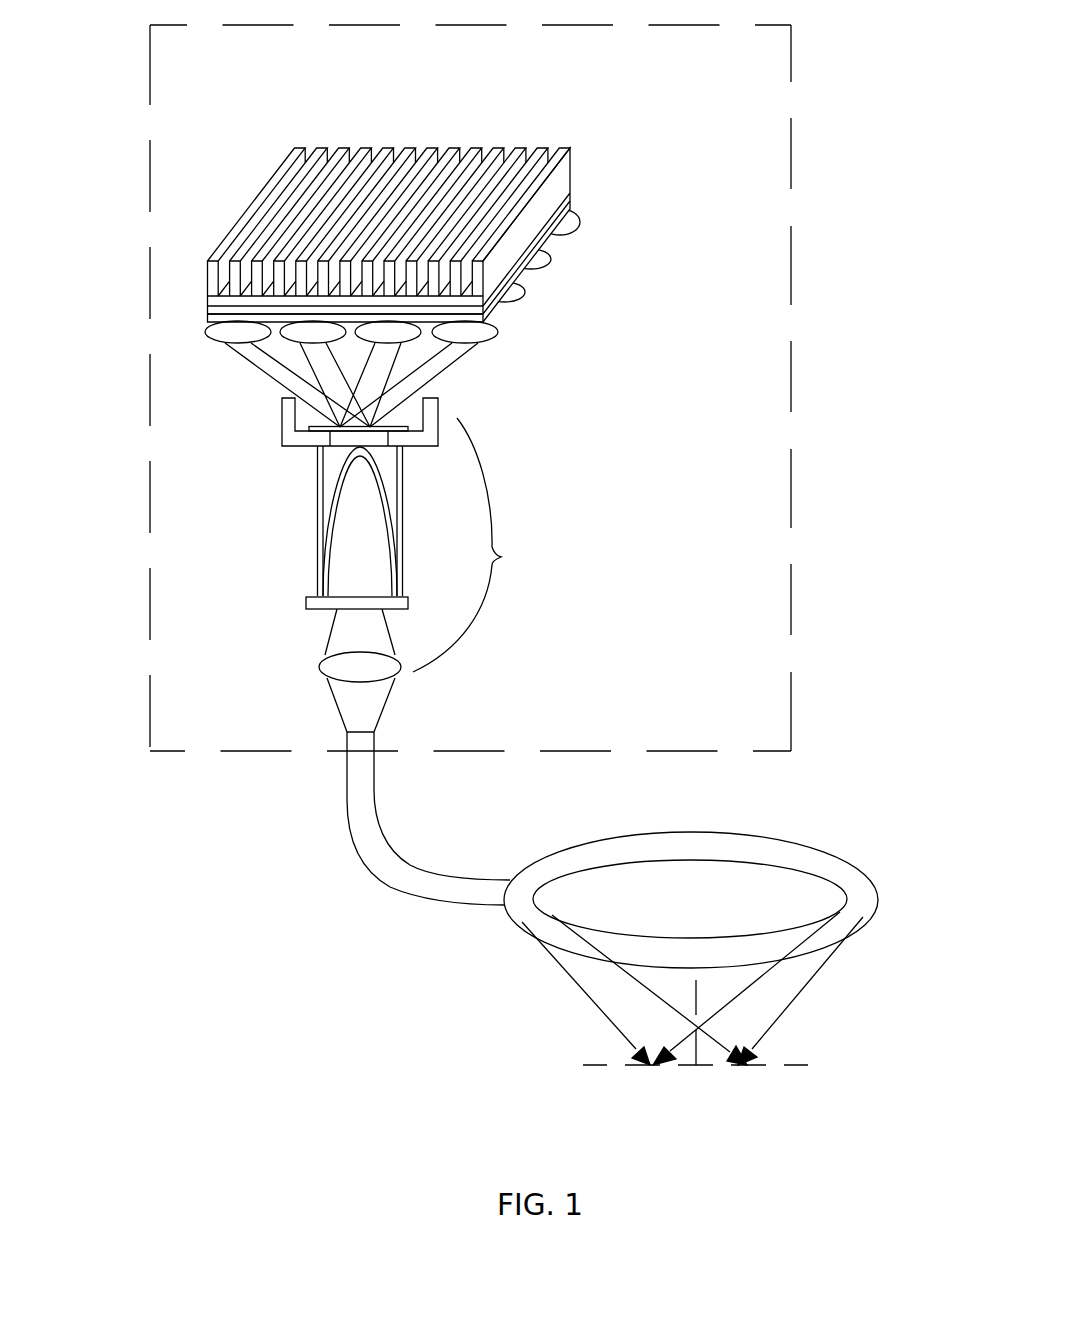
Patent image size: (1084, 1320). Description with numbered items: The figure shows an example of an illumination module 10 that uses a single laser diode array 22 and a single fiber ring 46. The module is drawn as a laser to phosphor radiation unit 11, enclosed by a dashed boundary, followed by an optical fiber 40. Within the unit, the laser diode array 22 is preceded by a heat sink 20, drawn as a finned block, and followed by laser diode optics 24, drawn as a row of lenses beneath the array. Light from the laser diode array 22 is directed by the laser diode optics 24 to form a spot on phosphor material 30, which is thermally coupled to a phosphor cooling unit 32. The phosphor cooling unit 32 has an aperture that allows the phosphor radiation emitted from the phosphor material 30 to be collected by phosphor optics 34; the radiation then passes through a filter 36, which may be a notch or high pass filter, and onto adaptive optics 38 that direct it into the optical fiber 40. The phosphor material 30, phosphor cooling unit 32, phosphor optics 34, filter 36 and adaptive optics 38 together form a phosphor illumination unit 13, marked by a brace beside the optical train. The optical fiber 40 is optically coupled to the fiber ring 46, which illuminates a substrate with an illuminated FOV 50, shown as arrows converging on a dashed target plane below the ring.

The illumination module 10 is at (501, 596).
The laser to phosphor radiation unit 11 is at (725, 561).
The phosphor illumination unit 13 is at (370, 560).
The heat sink 20 is at (253, 200).
The laser diode array 22 is at (209, 313).
The laser diode optics 24 is at (508, 306).
The phosphor material 30 is at (412, 392).
The phosphor cooling unit 32 is at (282, 431).
The phosphor optics 34 is at (318, 507).
The filter 36 is at (306, 601).
The adaptive optics 38 is at (322, 666).
The optical fiber 40 is at (347, 768).
The fiber ring 46 is at (812, 865).
The illuminated FOV 50 is at (652, 1070).